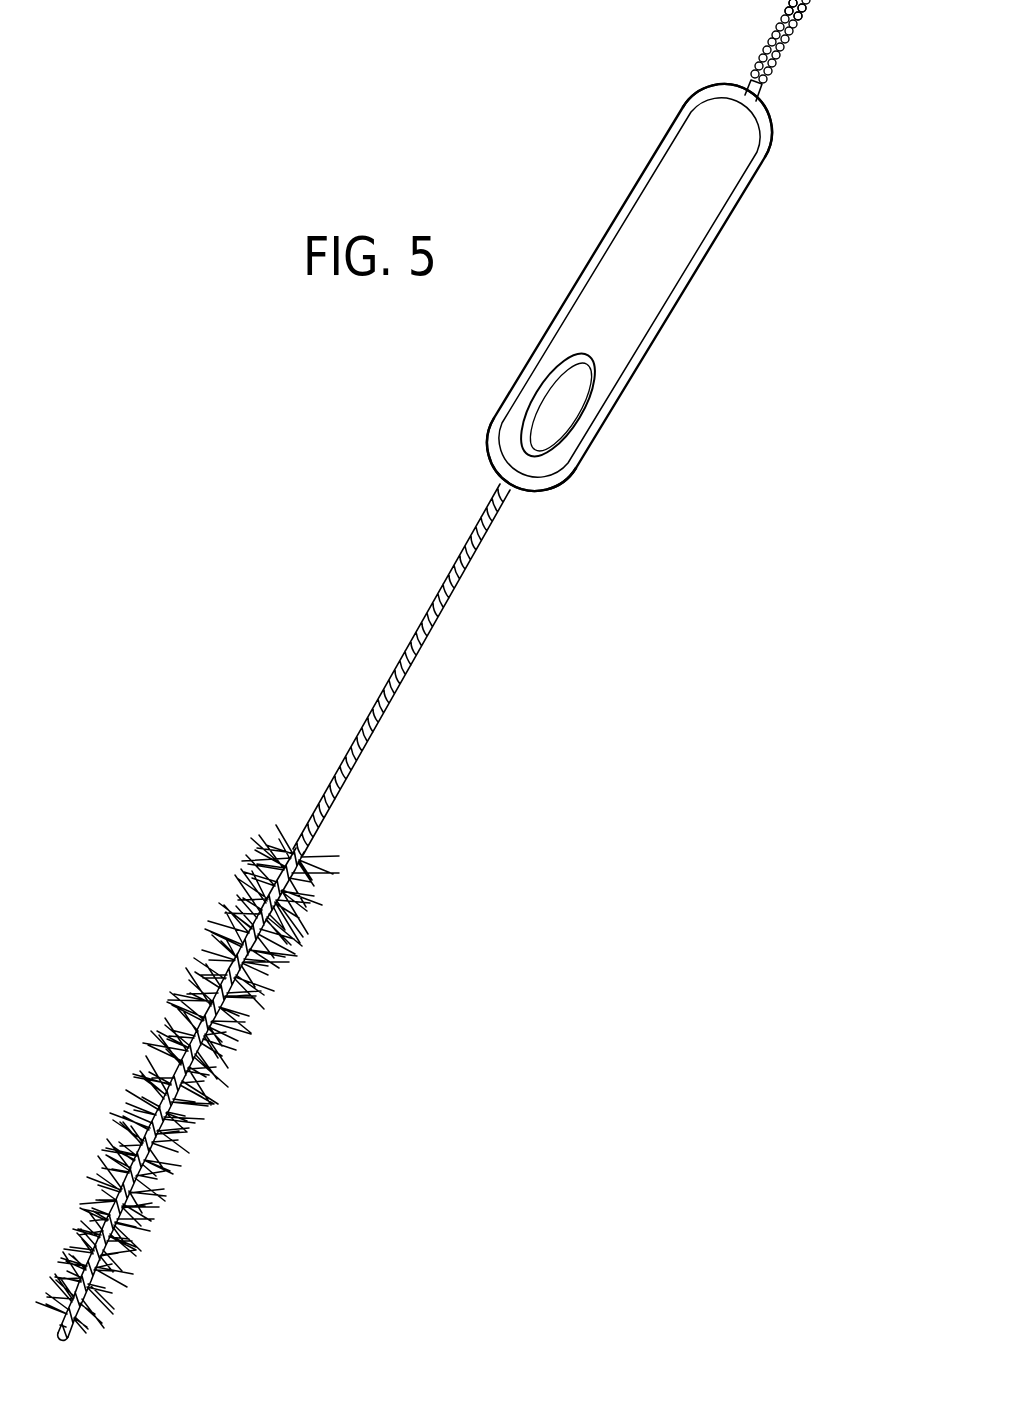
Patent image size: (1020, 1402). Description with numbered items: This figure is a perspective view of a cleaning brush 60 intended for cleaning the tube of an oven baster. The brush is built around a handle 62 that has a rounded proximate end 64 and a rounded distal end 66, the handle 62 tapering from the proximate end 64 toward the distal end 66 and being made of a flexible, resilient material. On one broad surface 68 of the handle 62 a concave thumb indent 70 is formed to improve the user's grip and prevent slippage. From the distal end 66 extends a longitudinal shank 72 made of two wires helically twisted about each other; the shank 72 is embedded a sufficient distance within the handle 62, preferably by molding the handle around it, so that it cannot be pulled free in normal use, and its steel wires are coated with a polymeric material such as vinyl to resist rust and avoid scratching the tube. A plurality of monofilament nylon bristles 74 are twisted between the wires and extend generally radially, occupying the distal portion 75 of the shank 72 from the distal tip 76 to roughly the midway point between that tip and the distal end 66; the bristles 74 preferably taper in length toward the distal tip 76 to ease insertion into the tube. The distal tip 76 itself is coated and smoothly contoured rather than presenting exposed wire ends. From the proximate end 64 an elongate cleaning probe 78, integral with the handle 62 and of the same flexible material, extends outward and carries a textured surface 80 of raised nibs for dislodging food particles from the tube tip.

The cleaning brush 60 is at (302, 531).
The handle 62 is at (640, 177).
The proximate end 64 is at (765, 103).
The distal end 66 is at (523, 490).
The broad surface 68 is at (672, 260).
The concave thumb indent 70 is at (562, 419).
The longitudinal shank 72 is at (403, 673).
The bristles 74 is at (290, 960).
The distal portion 75 is at (137, 982).
The distal tip 76 is at (62, 1337).
The cleaning probe 78 is at (740, 34).
The textured surface 80 is at (798, 20).